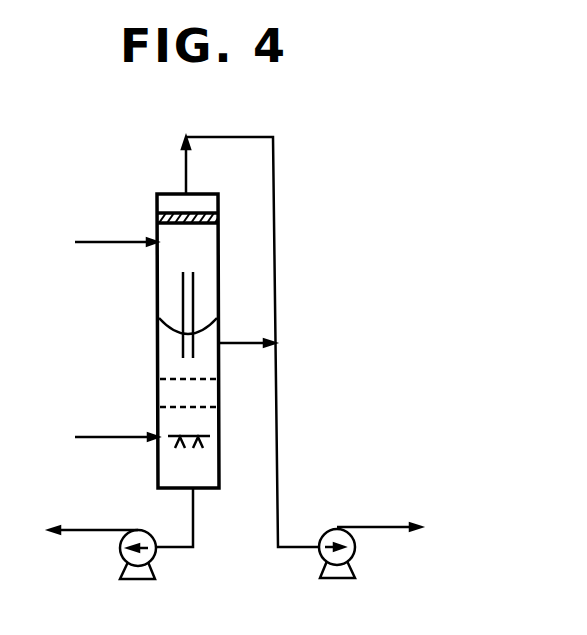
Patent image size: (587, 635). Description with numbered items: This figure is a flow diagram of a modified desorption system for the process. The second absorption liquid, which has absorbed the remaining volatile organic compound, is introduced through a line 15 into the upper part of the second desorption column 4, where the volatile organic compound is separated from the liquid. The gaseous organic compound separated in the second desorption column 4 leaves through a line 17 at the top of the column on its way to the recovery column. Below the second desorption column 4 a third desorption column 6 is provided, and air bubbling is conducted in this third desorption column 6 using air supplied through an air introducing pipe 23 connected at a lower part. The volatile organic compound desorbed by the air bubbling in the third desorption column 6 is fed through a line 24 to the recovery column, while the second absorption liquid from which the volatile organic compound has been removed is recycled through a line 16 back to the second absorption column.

The second desorption column 4 is at (203, 259).
The third desorption column 6 is at (210, 392).
The line 15 is at (108, 243).
The line 16 is at (175, 548).
The line 17 is at (185, 175).
The air introducing pipe 23 is at (105, 437).
The line 24 is at (243, 343).